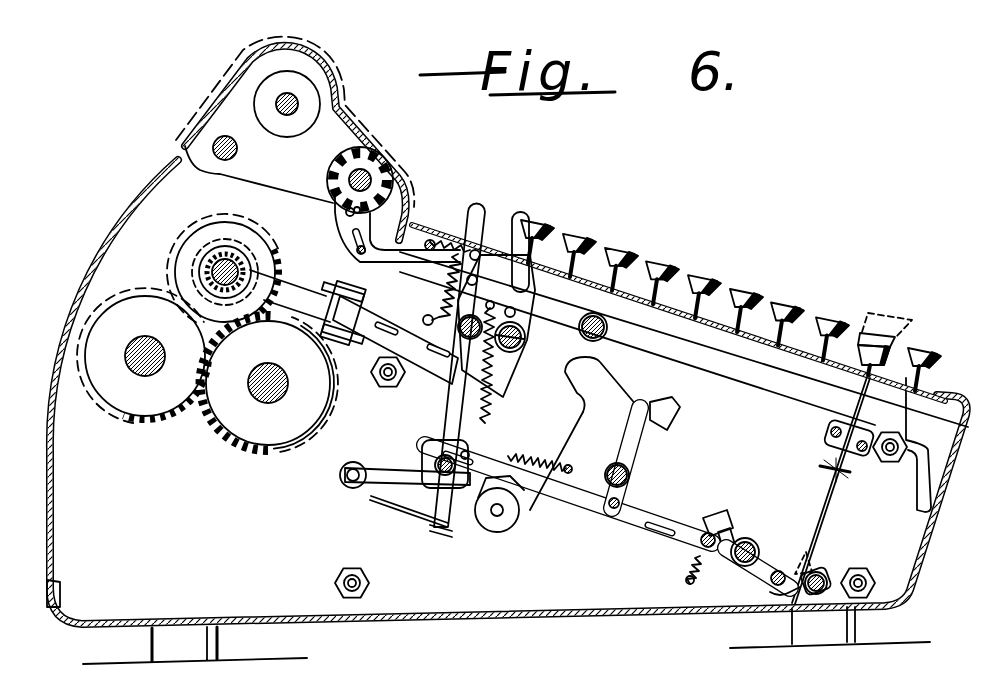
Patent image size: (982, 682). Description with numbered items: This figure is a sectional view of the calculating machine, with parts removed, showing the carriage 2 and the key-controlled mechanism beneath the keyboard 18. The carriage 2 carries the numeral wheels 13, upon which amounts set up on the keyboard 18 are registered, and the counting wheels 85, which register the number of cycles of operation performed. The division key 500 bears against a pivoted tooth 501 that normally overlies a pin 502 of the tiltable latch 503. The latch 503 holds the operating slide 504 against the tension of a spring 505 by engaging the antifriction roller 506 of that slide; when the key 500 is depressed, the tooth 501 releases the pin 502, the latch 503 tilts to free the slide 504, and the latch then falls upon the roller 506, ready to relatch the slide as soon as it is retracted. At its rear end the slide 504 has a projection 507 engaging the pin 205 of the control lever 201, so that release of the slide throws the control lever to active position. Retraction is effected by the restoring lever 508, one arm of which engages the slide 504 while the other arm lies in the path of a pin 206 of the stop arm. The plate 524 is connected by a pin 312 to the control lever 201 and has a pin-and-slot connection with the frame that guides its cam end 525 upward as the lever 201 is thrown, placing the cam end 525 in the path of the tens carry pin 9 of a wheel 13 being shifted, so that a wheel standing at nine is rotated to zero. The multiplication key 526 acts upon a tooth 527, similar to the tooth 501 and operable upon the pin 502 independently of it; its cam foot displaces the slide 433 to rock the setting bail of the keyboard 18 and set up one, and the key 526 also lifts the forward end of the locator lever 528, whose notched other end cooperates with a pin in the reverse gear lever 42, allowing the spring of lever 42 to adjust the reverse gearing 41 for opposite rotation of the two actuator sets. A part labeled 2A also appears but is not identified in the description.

The carriage 2 is at (212, 130).
The counting wheels 85 is at (305, 88).
The numeral wheels 13 is at (398, 170).
The reverse gearing 41 is at (220, 250).
The cam end 525 is at (347, 212).
The tens carry pin 9 is at (352, 214).
The plate 524 is at (405, 264).
The reversing lever 42 is at (520, 215).
The pin 312 is at (552, 240).
The keyboard 18 is at (794, 310).
The division key 500 is at (905, 326).
The pin 206 is at (640, 406).
The lever 2A is at (596, 401).
The locator lever 528 is at (748, 392).
The multiplication key 526 is at (860, 392).
The control lever 201 is at (446, 419).
The pin 205 is at (500, 448).
The spring 505 is at (533, 452).
The projection 507 is at (428, 470).
The restoring lever 508 is at (633, 461).
The operating slide 504 is at (575, 497).
The slide 433 is at (823, 468).
The tiltable latch 503 is at (725, 515).
The pin 502 is at (778, 570).
The pivoted tooth 501 is at (822, 560).
The antifriction roller 506 is at (707, 543).
The tooth 527 is at (768, 592).